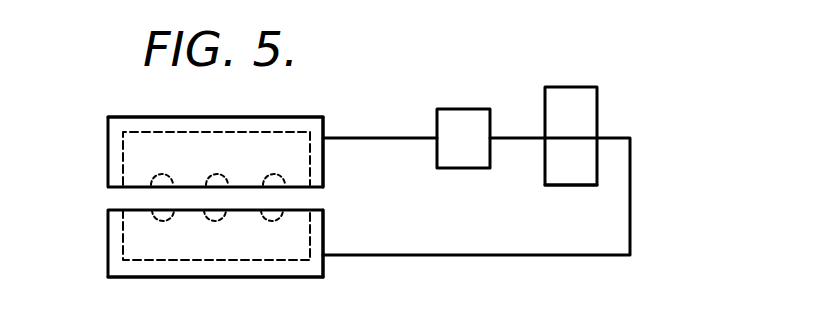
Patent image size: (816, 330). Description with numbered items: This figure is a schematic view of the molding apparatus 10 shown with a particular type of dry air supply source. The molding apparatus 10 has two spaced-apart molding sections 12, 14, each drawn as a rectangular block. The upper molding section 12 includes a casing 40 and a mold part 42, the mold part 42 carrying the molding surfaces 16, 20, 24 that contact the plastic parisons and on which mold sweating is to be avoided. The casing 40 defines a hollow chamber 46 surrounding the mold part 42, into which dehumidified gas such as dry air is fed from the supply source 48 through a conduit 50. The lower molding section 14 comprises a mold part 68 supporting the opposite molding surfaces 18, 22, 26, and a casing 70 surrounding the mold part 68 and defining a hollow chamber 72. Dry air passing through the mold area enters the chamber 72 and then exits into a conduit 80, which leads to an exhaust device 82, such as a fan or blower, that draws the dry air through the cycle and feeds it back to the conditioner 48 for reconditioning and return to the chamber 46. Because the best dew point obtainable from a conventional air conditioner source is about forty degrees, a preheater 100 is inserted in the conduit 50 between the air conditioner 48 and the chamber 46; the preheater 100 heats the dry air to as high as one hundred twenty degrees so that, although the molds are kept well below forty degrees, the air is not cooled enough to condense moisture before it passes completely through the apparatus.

The molding apparatus 10 is at (108, 96).
The molding section 12 is at (102, 146).
The molding section 14 is at (102, 240).
The molding surface 16 is at (166, 175).
The molding surface 18 is at (157, 220).
The mold surface 20 is at (219, 175).
The mold surface 22 is at (210, 220).
The mold surface 24 is at (274, 175).
The mold surface 26 is at (264, 221).
The casing 40 is at (222, 117).
The mold part 42 is at (258, 131).
The hollow chamber 46 is at (318, 138).
The supply source 48 is at (597, 105).
The conduit 50 is at (365, 140).
The mold part 68 is at (327, 215).
The casing 70 is at (192, 279).
The hollow chamber 72 is at (266, 263).
The conduit 80 is at (505, 253).
The exhaust device 82 is at (560, 187).
The preheater 100 is at (461, 109).